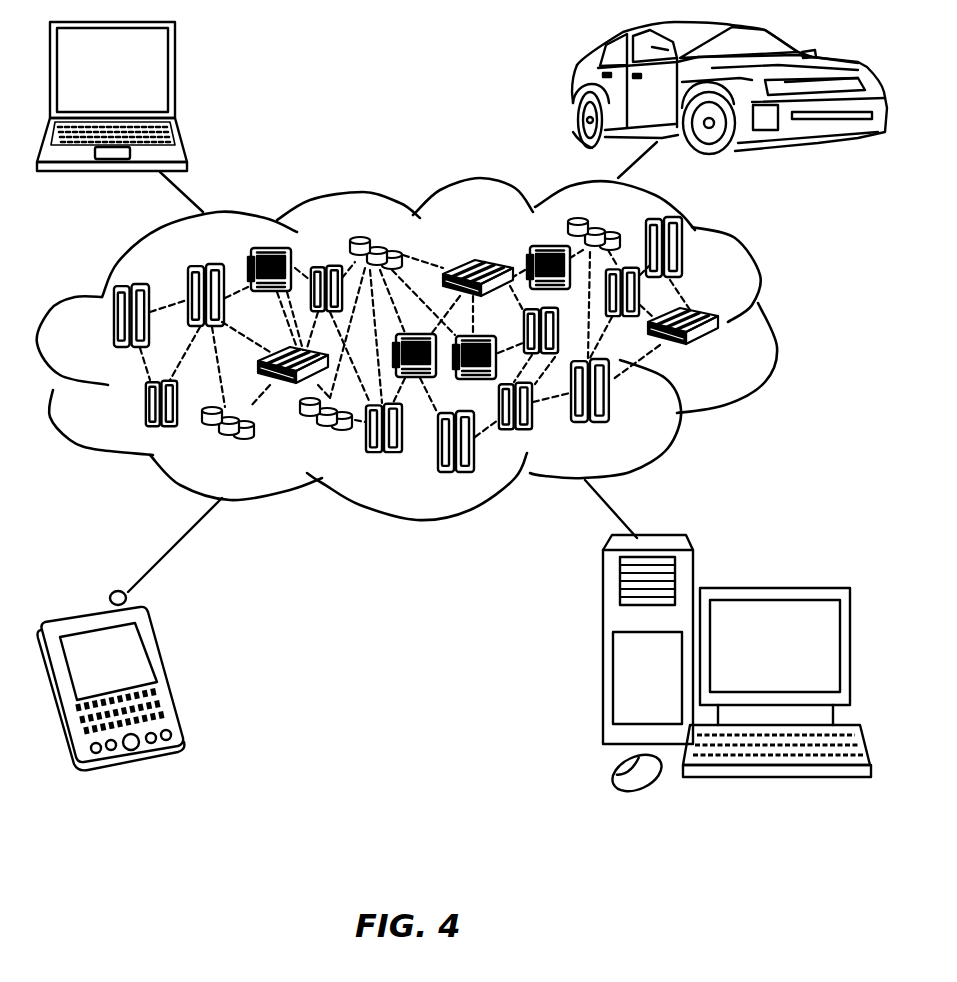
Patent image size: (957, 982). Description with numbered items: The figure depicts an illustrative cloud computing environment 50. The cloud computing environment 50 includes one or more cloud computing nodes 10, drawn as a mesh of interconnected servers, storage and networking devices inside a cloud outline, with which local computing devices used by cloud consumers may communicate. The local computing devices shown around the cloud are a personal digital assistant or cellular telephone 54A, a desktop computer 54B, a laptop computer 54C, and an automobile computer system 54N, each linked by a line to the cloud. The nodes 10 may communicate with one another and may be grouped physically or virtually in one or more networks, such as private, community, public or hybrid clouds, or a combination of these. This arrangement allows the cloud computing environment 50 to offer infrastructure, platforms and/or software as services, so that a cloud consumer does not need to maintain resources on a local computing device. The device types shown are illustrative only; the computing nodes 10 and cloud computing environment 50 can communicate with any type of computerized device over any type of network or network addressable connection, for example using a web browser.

The cloud computing node 10 is at (724, 354).
The cloud computing environment 50 is at (435, 349).
The personal digital assistant or cellular telephone 54A is at (167, 673).
The desktop computer 54B is at (771, 588).
The laptop computer 54C is at (175, 78).
The automobile computer system 54N is at (573, 90).